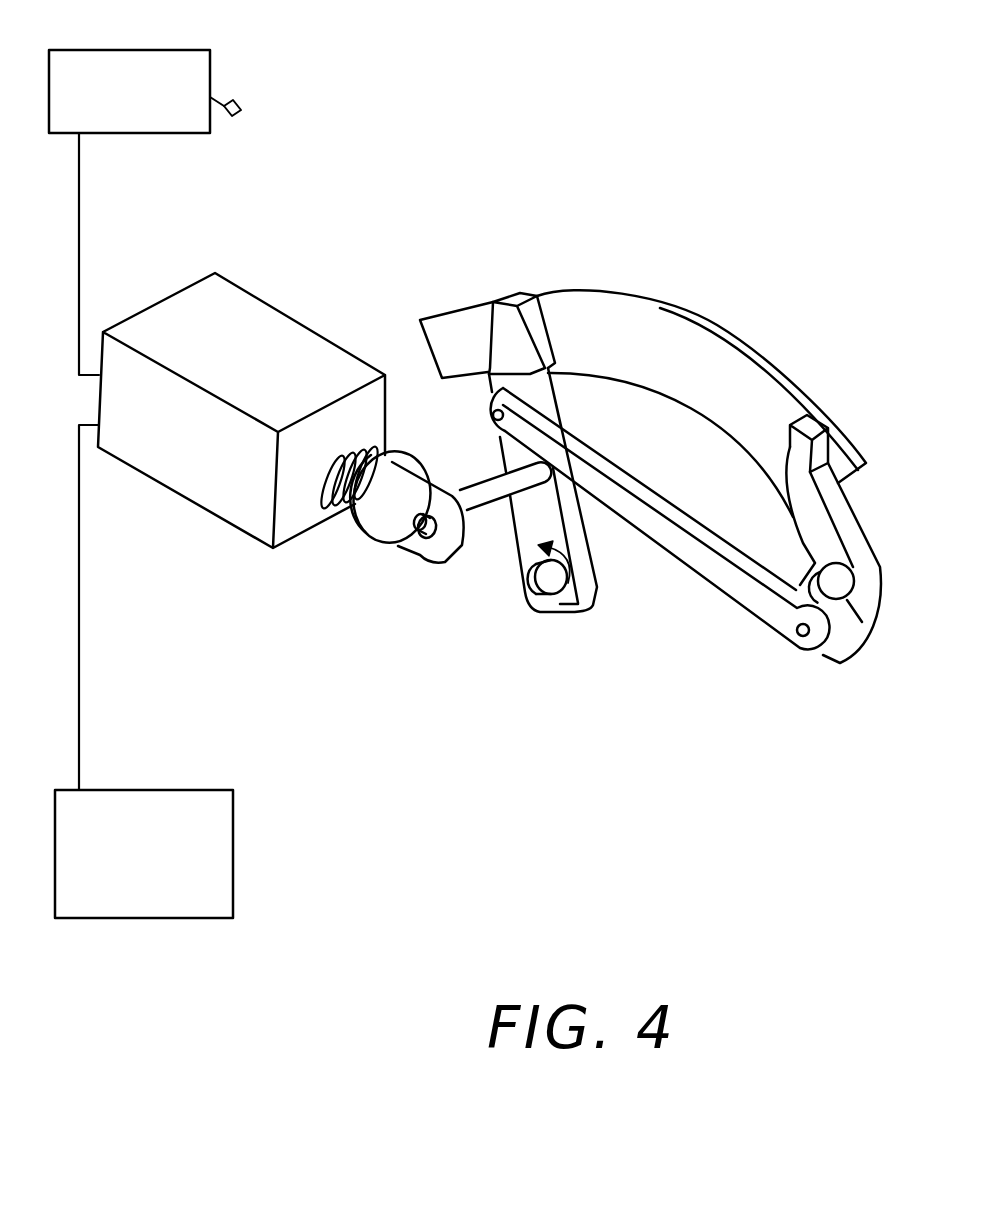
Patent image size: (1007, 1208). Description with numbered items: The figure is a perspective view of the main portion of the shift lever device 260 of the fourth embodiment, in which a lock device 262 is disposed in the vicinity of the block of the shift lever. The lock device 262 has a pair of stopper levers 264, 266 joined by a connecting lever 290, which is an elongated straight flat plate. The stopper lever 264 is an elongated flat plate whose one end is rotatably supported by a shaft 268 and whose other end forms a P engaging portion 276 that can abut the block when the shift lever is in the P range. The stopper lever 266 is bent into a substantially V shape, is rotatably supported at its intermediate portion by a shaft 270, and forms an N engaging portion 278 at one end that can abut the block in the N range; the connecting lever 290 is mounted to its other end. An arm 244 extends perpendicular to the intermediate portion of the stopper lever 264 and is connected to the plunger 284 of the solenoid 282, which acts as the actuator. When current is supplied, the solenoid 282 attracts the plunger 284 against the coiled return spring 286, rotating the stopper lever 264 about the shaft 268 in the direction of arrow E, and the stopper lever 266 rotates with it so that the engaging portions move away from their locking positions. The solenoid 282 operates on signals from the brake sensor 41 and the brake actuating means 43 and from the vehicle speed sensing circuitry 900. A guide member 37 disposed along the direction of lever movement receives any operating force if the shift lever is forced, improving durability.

The brake sensor 41 is at (158, 50).
The brake actuating means 43 is at (227, 100).
The vehicle speed sensing circuitry 900 is at (143, 920).
The solenoid 282 is at (297, 322).
The coiled return spring 286 is at (377, 447).
The plunger 284 is at (445, 483).
The arm 244 is at (482, 508).
The guide member 37 is at (800, 386).
The shift lever device 260 is at (478, 463).
The lock device 262 is at (486, 625).
The P engaging portion 276 is at (515, 338).
The stopper lever 264 is at (550, 400).
The shaft 268 is at (527, 596).
The arrow E is at (568, 607).
The connecting lever 290 is at (662, 500).
The N engaging portion 278 is at (812, 450).
The stopper lever 266 is at (857, 518).
The shaft 270 is at (845, 585).